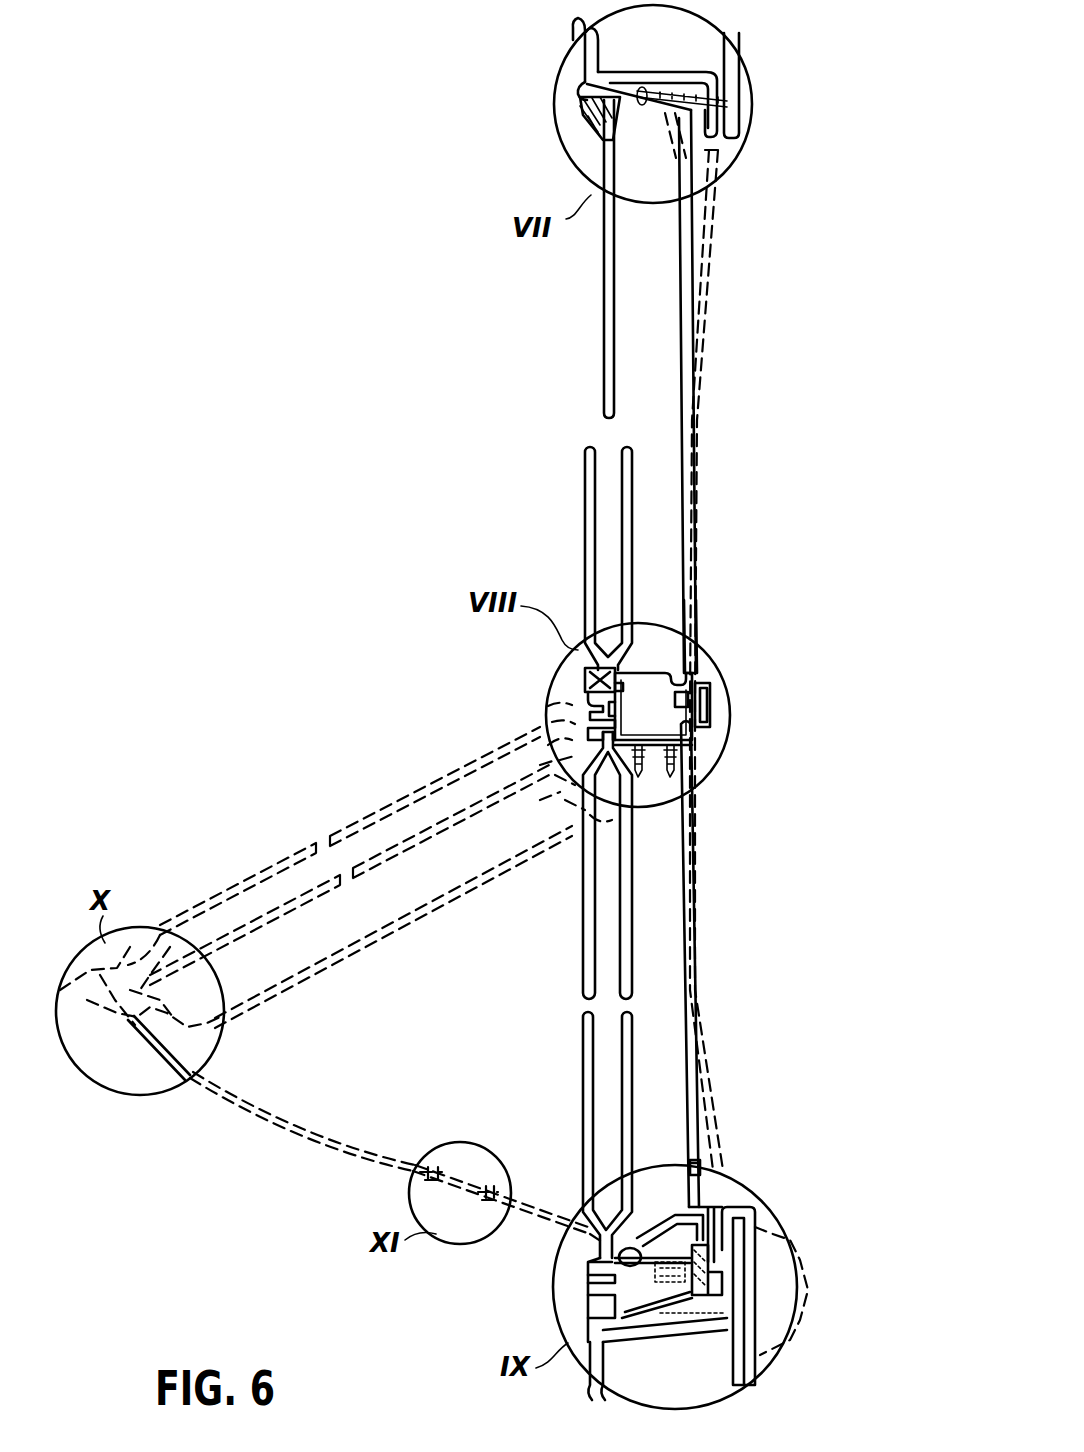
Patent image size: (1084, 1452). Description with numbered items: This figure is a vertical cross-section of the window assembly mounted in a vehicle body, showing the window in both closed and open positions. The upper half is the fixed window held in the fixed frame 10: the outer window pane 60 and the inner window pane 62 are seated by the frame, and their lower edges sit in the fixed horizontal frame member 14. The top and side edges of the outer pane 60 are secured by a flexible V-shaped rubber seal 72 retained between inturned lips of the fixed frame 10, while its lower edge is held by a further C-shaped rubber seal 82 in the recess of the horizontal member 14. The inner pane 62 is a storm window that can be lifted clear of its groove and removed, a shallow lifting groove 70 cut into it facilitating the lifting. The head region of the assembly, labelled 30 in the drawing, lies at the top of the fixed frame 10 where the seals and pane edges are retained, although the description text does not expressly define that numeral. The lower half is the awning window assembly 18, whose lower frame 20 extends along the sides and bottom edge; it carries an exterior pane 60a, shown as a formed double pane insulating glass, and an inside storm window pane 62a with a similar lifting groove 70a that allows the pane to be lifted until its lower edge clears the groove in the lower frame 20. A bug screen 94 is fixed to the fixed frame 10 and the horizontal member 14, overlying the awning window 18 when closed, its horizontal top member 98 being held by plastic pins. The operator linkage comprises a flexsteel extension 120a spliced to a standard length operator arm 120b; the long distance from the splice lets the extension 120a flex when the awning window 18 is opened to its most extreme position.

The fixed frame 10 is at (580, 88).
The fixed horizontal frame member 14 is at (640, 672).
The awning window assembly 18 is at (418, 927).
The awning window lower frame 20 is at (641, 1212).
The head assembly 30 is at (644, 72).
The outer window pane 60 is at (603, 335).
The exterior pane 60a is at (420, 790).
The inner window pane 62 is at (690, 335).
The inside storm window pane 62a is at (700, 948).
The lifting groove 70 is at (688, 640).
The lifting groove 70a is at (712, 1162).
The rubber seal 72 is at (597, 128).
The rubber seal 82 is at (583, 661).
The bug screen 94 is at (700, 843).
The horizontal top member 98 is at (712, 698).
The flexsteel extension 120a is at (311, 1138).
The standard length operator arm 120b is at (531, 1222).